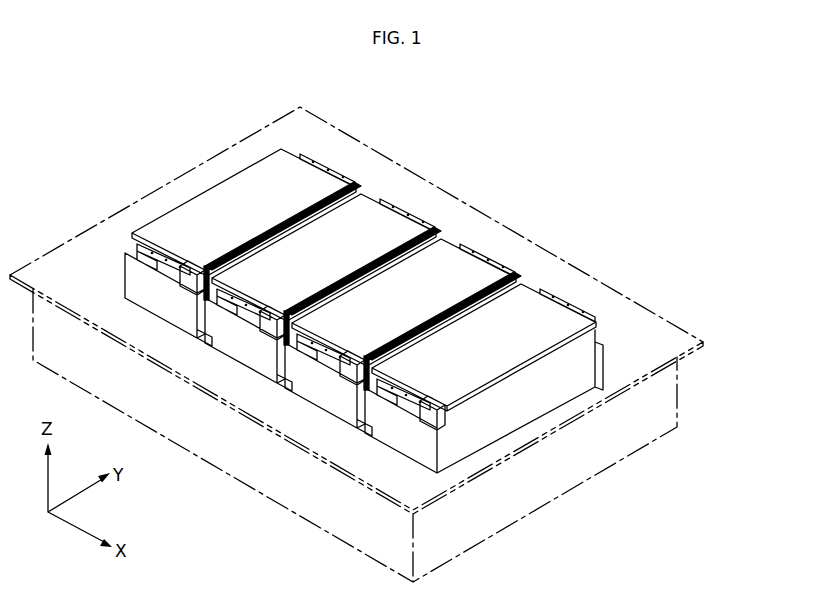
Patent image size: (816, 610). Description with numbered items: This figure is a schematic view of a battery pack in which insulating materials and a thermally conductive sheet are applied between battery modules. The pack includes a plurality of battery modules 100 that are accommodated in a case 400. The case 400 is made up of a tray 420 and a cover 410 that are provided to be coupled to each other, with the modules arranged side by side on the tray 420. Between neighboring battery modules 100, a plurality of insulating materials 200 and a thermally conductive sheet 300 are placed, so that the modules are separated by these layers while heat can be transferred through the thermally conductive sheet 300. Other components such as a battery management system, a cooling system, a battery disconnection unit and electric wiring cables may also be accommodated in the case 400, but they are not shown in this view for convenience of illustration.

The battery module 100 is at (288, 170).
The insulating material 200 is at (430, 221).
The thermally conductive sheet 300 is at (352, 192).
The case 400 is at (403, 344).
The cover 410 is at (668, 331).
The tray 420 is at (745, 312).